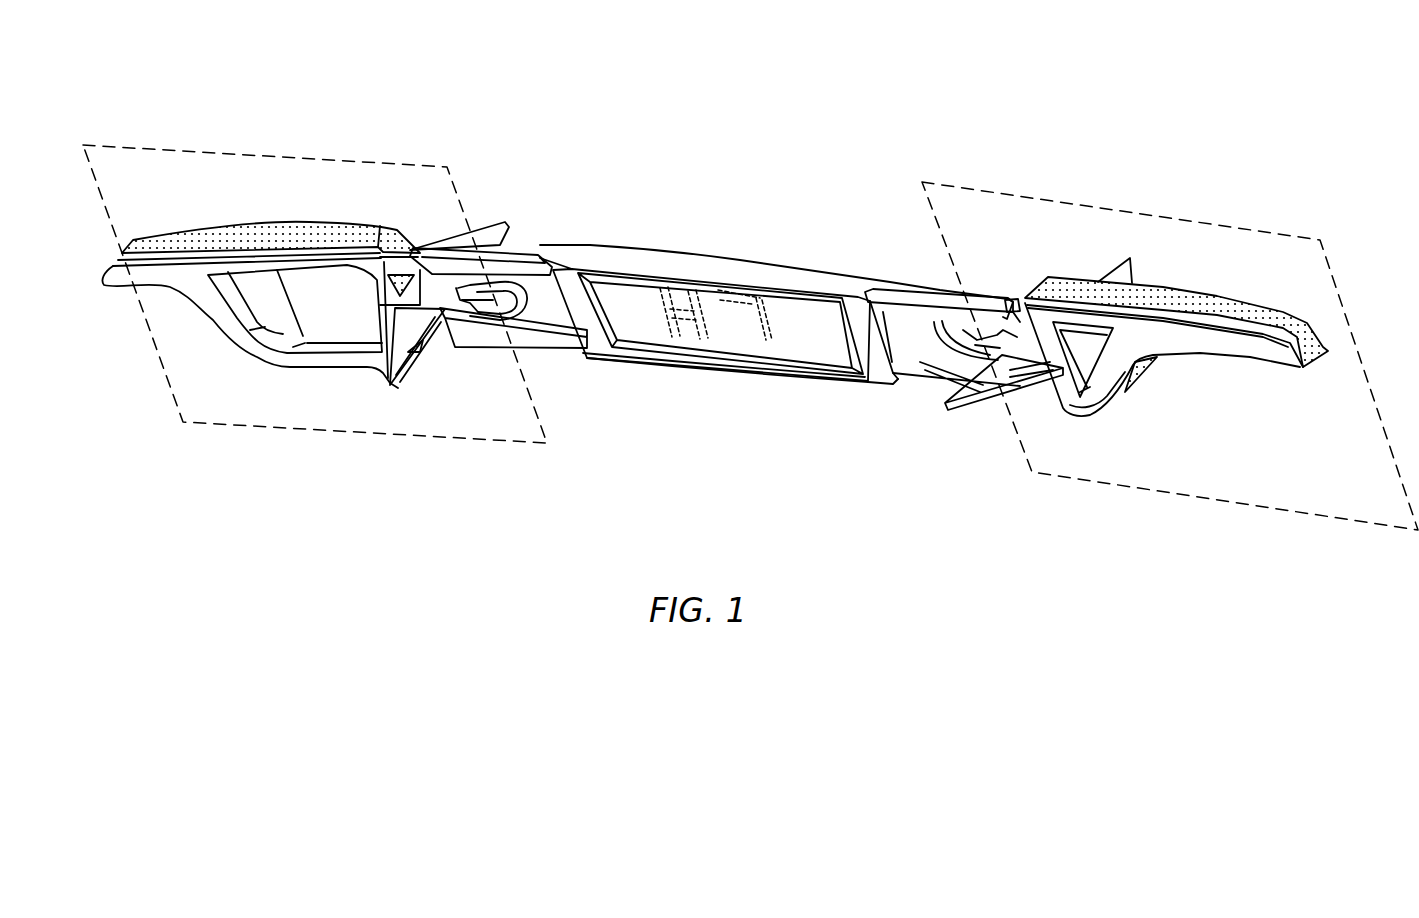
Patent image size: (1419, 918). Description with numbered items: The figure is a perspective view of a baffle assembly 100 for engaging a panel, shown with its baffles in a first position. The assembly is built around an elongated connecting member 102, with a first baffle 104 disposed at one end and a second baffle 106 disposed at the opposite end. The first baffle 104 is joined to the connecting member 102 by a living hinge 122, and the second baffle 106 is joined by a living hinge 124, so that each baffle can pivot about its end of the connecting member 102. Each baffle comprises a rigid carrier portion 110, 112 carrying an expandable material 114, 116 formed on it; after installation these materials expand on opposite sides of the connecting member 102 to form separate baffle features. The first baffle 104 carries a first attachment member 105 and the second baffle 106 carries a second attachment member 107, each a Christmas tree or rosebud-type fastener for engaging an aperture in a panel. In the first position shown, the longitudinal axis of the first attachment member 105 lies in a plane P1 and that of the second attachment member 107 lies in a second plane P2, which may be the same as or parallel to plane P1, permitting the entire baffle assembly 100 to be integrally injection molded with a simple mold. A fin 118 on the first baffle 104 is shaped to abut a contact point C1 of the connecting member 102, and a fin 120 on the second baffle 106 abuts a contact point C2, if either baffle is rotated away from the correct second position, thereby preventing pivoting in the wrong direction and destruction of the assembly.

The baffle assembly 100 is at (600, 116).
The connecting member 102 is at (715, 349).
The first baffle 104 is at (1138, 365).
The first attachment member 105 is at (1021, 275).
The second baffle 106 is at (344, 280).
The second attachment member 107 is at (508, 240).
The rigid carrier portion 110 is at (1192, 338).
The rigid carrier portion 112 is at (233, 328).
The expandable material 114 is at (1307, 335).
The expandable material 116 is at (153, 246).
The fin 118 is at (1121, 269).
The fin 120 is at (482, 228).
The living hinge 122 is at (1004, 389).
The living hinge 124 is at (400, 263).
The contact point C1 is at (933, 340).
The contact point C2 is at (513, 297).
The plane P1 is at (983, 190).
The second plane P2 is at (220, 148).